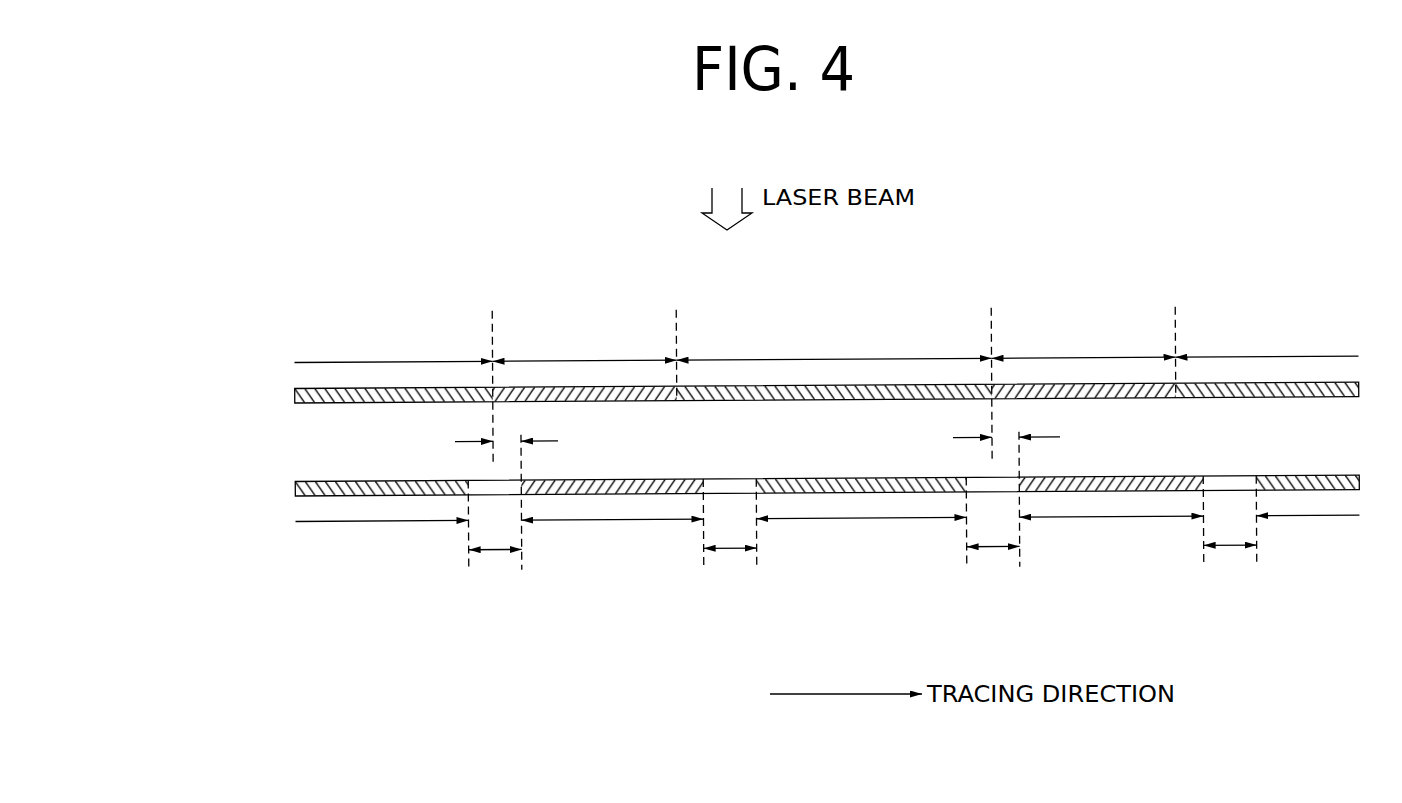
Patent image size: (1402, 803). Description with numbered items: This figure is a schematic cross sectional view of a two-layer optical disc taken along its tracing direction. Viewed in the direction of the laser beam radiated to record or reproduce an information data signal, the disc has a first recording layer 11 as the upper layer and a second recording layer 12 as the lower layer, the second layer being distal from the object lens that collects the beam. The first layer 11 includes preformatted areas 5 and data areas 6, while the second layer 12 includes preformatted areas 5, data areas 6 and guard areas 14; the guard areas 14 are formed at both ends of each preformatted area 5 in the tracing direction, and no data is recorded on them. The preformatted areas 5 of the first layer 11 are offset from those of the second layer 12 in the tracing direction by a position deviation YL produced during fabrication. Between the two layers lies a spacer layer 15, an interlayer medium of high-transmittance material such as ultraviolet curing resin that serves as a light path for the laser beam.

The preformatted area 5 is at (1115, 551).
The data area 6 is at (1313, 553).
The first recording layer 11 is at (726, 394).
The second recording layer 12 is at (726, 487).
The guard area 14 is at (492, 551).
The spacer layer 15 is at (599, 442).